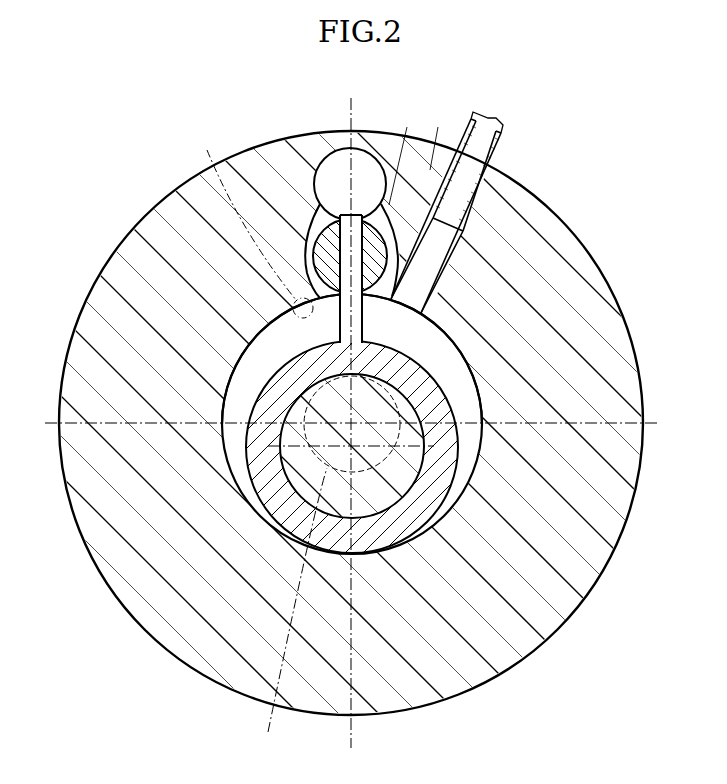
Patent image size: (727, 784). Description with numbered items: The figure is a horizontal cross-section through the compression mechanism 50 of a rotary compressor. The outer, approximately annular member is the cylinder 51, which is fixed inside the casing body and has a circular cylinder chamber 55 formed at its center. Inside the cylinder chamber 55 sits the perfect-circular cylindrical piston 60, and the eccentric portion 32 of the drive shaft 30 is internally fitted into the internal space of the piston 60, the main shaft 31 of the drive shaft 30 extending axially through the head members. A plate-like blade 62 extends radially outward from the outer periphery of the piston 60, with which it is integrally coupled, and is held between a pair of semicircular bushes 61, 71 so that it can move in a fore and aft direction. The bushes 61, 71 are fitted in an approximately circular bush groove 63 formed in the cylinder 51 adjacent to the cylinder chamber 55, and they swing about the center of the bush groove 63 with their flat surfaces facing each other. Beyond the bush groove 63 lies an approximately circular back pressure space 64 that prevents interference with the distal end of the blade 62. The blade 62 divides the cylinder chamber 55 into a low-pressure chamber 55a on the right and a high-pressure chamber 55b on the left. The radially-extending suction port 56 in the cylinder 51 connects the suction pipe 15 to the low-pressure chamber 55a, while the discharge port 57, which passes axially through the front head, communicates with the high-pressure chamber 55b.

The suction pipe 15 is at (498, 153).
The drive shaft 30 is at (280, 487).
The main shaft 31 is at (328, 566).
The eccentric portion 32 is at (250, 467).
The compression mechanism 50 is at (93, 242).
The cylinder 51 is at (622, 527).
The cylinder chamber 55 is at (49, 283).
The low-pressure chamber 55a is at (449, 352).
The high-pressure chamber 55b is at (252, 353).
The suction port 56 is at (441, 269).
The discharge port 57 is at (253, 223).
The piston 60 is at (427, 508).
The bush 61 is at (407, 127).
The blade 62 is at (438, 127).
The bush groove 63 is at (318, 229).
The back pressure space 64 is at (345, 166).
The bush 71 is at (311, 212).